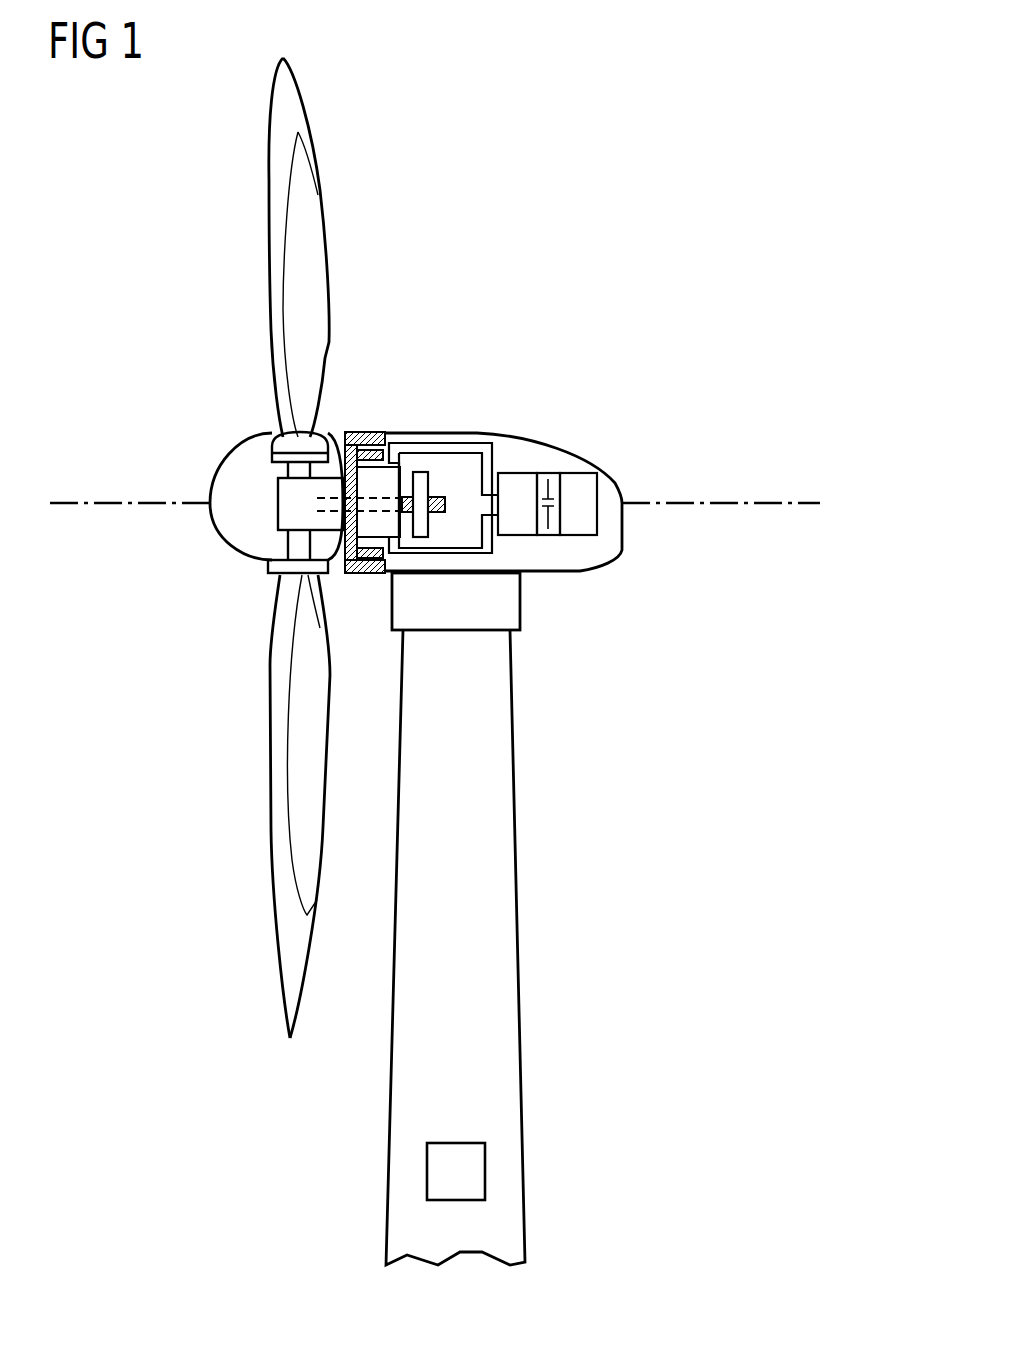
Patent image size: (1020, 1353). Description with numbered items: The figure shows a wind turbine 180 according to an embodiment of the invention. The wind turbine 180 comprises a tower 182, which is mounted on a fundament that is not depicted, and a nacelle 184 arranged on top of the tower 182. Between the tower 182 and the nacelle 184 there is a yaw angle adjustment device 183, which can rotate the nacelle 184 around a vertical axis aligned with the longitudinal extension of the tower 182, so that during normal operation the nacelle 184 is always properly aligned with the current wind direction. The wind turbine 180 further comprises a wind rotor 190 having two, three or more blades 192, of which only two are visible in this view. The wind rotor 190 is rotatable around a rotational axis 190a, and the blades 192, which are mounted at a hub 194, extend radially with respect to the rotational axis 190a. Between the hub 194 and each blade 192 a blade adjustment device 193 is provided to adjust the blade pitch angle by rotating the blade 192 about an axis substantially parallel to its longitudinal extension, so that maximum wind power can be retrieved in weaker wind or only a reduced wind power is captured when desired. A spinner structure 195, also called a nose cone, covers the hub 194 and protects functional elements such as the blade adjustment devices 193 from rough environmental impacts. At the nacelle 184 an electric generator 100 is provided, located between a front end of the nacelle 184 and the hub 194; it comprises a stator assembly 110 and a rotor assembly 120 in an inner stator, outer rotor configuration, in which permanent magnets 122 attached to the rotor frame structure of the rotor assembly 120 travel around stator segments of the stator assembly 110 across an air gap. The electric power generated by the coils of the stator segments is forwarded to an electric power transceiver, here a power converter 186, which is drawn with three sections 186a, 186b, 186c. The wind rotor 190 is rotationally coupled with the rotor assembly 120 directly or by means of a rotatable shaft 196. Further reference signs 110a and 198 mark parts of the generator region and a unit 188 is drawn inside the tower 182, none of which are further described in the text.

The electric generator 100 is at (372, 590).
The stator assembly 110 is at (475, 499).
The generator stator 110a is at (453, 547).
The rotor assembly 120 is at (358, 430).
The permanent magnets 122 is at (350, 575).
The wind turbine 180 is at (720, 265).
The tower 182 is at (505, 787).
The yaw angle adjustment device 183 is at (507, 608).
The nacelle 184 is at (625, 530).
The power converter 186 is at (593, 507).
The generator-side converter 186a is at (517, 535).
The DC link capacitor 186b is at (547, 537).
The grid-side converter 186c is at (580, 537).
The controller 188 is at (452, 1143).
The wind rotor 190 is at (165, 398).
The rotational axis 190a is at (68, 497).
The blades 192 is at (272, 238).
The blade adjustment device 193 is at (272, 435).
The hub 194 is at (292, 515).
The spinner structure 195 is at (234, 533).
The rotatable shaft 196 is at (305, 498).
The generator rotor 198 is at (422, 472).